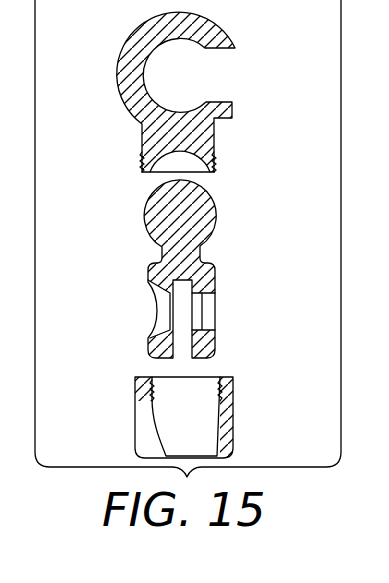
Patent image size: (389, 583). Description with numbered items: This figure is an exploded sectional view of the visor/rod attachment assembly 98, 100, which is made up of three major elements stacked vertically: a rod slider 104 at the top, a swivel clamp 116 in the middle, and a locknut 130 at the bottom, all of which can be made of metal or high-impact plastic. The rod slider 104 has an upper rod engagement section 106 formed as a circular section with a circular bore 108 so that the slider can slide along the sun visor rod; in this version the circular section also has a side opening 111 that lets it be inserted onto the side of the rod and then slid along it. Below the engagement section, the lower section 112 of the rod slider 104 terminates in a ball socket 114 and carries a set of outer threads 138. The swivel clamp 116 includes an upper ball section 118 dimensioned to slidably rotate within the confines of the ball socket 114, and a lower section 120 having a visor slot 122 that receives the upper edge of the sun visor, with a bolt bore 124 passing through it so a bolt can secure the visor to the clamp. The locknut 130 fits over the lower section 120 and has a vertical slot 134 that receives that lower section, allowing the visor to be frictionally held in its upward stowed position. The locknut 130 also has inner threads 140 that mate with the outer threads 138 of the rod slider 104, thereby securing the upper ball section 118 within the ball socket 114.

The rod slider 104 is at (179, 97).
The upper rod engagement section 106 is at (213, 35).
The circular bore 108 is at (150, 68).
The side opening 111 is at (183, 78).
The lower section 112 is at (156, 137).
The ball socket 114 is at (178, 163).
The outer threads 138 is at (143, 163).
The connector member 98 is at (175, 271).
The visor/rod attachment assembly 100 is at (225, 271).
The swivel clamp 116 is at (225, 271).
The upper ball section 118 is at (200, 220).
The visor slot 122 is at (180, 293).
The bolt bore 124 is at (207, 317).
The lower section 120 is at (208, 345).
The locknut 130 is at (182, 413).
The vertical slot 134 is at (145, 425).
The inner threads 140 is at (148, 385).